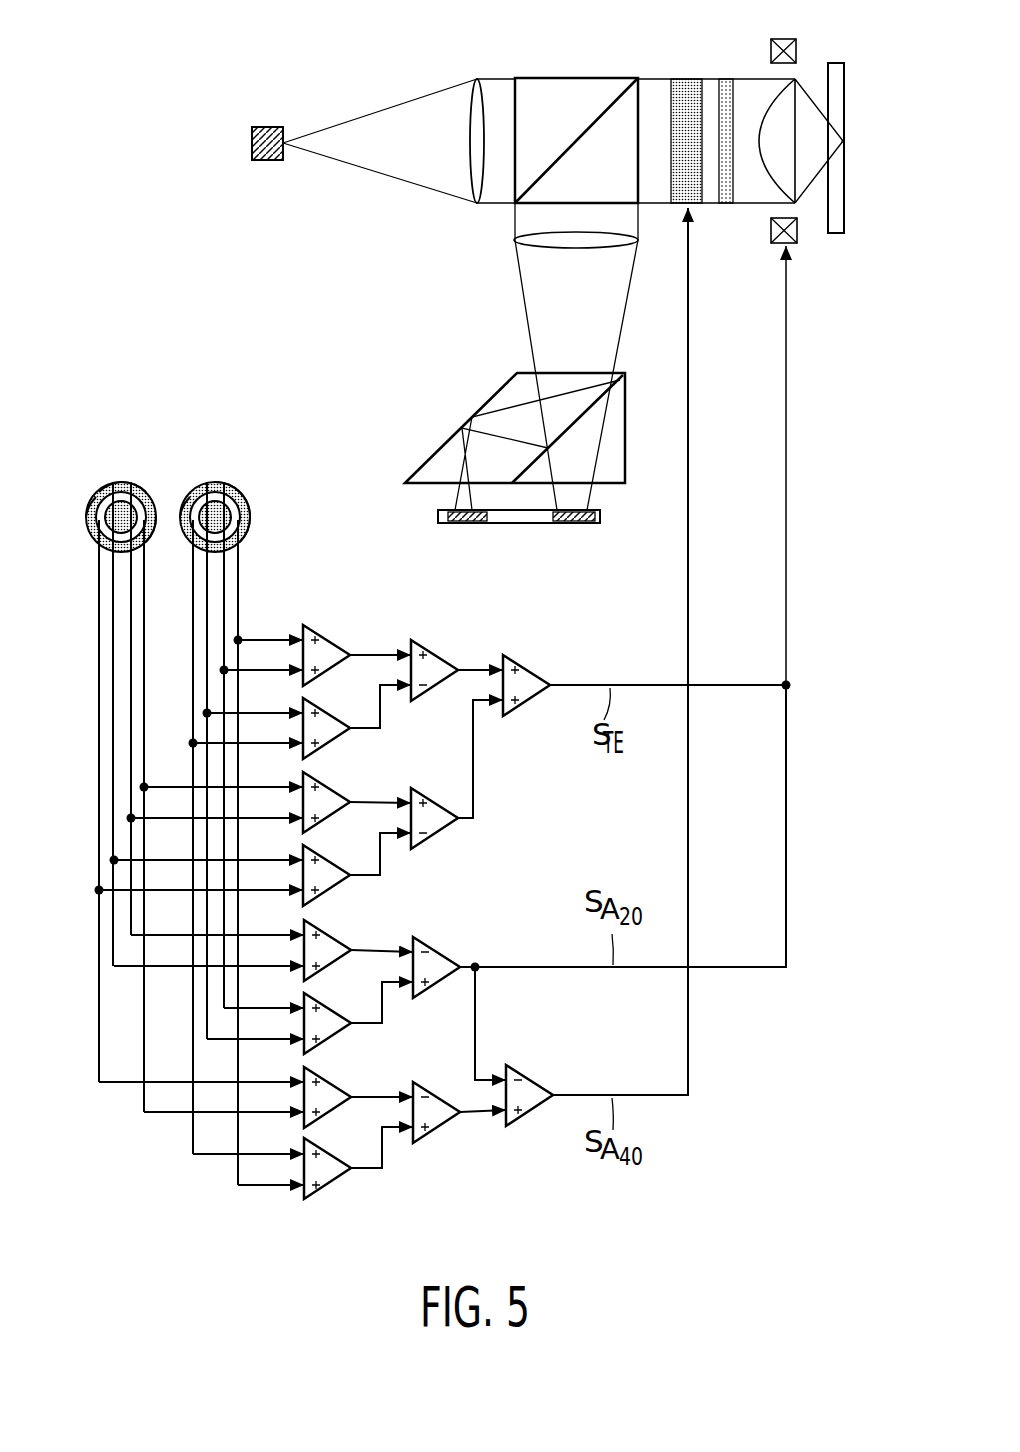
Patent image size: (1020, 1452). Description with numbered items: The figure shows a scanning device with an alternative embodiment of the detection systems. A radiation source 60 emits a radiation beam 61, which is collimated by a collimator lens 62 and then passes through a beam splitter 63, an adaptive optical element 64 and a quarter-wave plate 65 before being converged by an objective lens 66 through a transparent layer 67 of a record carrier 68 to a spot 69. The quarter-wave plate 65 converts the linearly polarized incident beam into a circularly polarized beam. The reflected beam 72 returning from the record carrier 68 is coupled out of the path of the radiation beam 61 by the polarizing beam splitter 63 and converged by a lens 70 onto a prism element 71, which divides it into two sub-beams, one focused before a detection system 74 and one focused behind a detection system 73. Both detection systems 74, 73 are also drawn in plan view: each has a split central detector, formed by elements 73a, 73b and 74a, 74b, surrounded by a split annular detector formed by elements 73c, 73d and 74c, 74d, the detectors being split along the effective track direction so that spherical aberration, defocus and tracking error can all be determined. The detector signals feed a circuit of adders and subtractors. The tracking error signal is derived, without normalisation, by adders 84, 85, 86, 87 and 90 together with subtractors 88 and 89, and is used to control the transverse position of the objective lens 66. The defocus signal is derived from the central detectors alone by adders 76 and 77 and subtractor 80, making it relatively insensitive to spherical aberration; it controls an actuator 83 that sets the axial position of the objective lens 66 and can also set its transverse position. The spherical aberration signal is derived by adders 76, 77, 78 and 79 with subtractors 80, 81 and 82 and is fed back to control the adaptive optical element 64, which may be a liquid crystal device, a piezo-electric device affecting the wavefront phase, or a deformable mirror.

The radiation source 60 is at (262, 127).
The radiation beam 61 is at (372, 110).
The collimator lens 62 is at (477, 79).
The beam splitter 63 is at (545, 78).
The adaptive optical element 64 is at (687, 79).
The quarter-wave plate 65 is at (724, 79).
The objective lens 66 is at (770, 182).
The transparent layer 67 is at (836, 63).
The record carrier 68 is at (877, 36).
The spot 69 is at (843, 141).
The lens 70 is at (515, 241).
The prism element 71 is at (517, 373).
The reflected beam 72 is at (524, 298).
The detection system 73 is at (565, 523).
The detection system 74 is at (468, 523).
The central detector element 73a is at (204, 480).
The central detector element 73b is at (238, 496).
The annular detector element 73c is at (185, 520).
The annular detector element 73d is at (246, 528).
The central detector element 74a is at (108, 500).
The central detector element 74b is at (136, 480).
The annular detector element 74c is at (86, 525).
The annular detector element 74d is at (148, 528).
The adder 76 is at (338, 938).
The adder 77 is at (330, 1003).
The adder 78 is at (338, 1085).
The adder 79 is at (330, 1150).
The subtractor 80 is at (433, 946).
The subtractor 81 is at (437, 1088).
The subtractor 82 is at (528, 1074).
The actuator 83 is at (797, 235).
The adder 84 is at (324, 636).
The adder 85 is at (336, 722).
The adder 86 is at (324, 783).
The adder 87 is at (336, 869).
The subtractor 88 is at (432, 650).
The subtractor 89 is at (437, 792).
The adder 90 is at (524, 667).